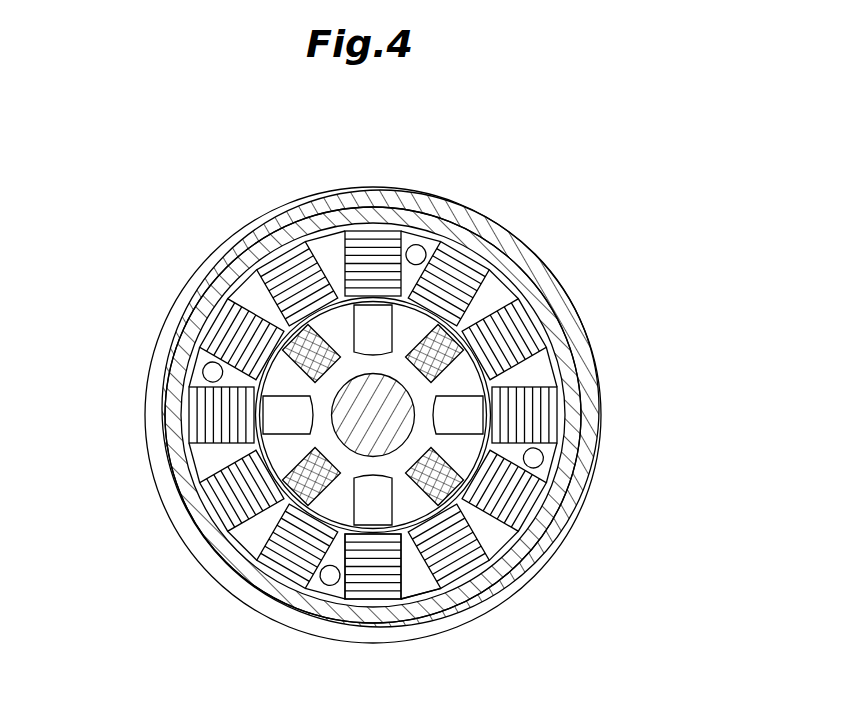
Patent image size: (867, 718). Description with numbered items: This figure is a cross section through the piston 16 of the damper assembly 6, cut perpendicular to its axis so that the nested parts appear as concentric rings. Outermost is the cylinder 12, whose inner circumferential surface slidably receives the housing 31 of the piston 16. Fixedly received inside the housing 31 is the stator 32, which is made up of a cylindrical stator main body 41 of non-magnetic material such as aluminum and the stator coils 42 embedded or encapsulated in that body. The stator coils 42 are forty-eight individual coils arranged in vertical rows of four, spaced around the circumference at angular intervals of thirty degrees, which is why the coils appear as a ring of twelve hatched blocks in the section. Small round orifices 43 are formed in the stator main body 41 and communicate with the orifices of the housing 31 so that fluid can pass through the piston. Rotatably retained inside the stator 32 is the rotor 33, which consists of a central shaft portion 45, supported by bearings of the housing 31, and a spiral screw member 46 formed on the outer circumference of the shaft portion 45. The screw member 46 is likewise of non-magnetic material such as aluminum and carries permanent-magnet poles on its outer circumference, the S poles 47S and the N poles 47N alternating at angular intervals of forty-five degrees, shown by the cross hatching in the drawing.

The electric motor 6 is at (160, 198).
The cylinder 12 is at (523, 580).
The piston 16 is at (513, 247).
The housing 31 is at (551, 322).
The stator 32 is at (245, 570).
The rotor 33 is at (258, 452).
The stator main body 41 is at (415, 588).
The stator coils 42 is at (375, 590).
The orifices 43 is at (488, 464).
The shaft portion 45 is at (343, 407).
The spiral screw member 46 is at (323, 403).
The magnetic poles 47N is at (262, 444).
The magnetic poles 47S is at (367, 517).